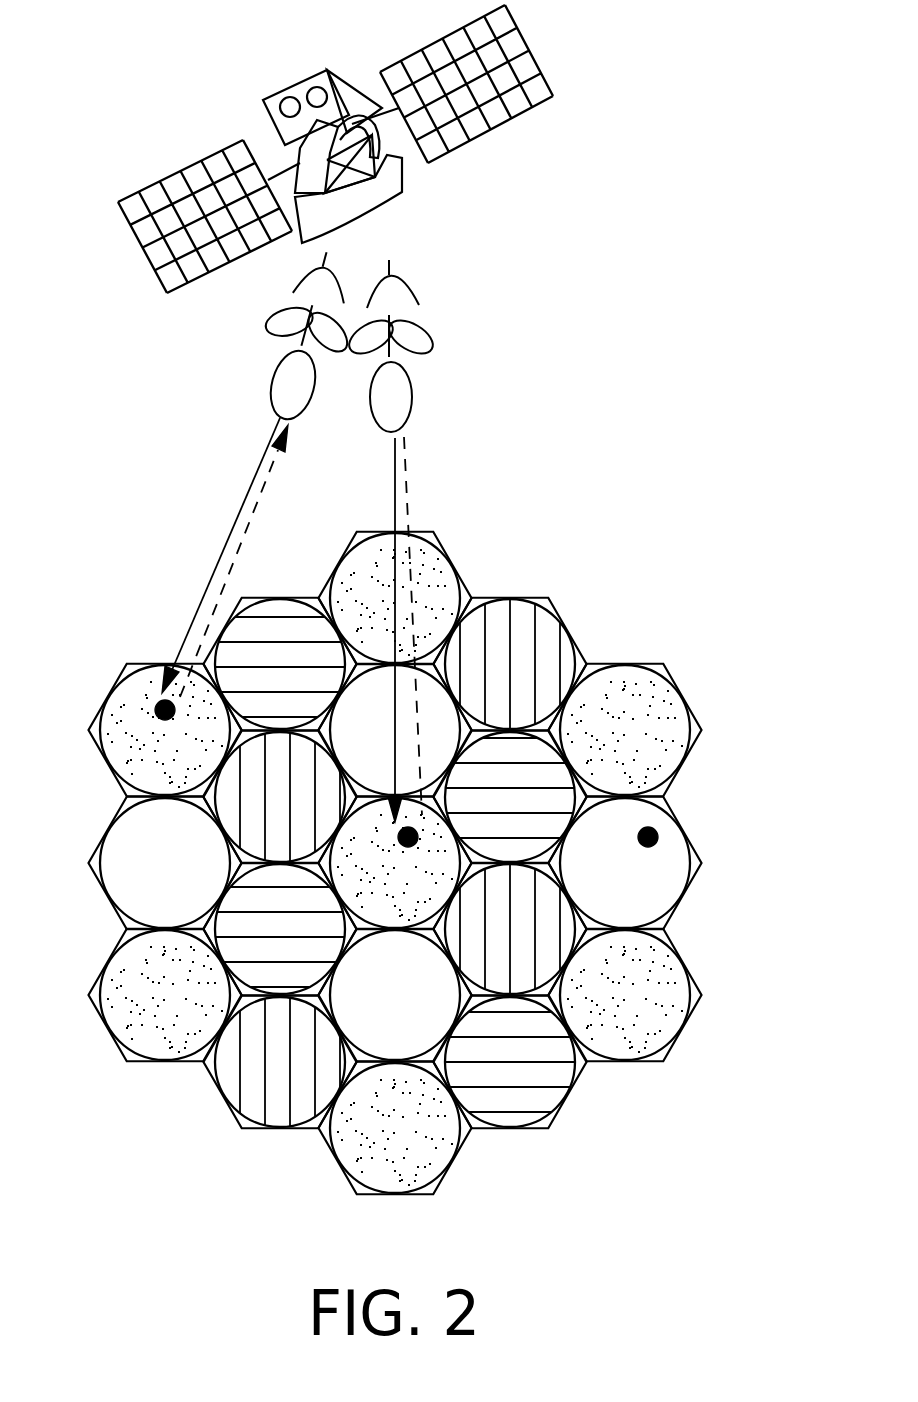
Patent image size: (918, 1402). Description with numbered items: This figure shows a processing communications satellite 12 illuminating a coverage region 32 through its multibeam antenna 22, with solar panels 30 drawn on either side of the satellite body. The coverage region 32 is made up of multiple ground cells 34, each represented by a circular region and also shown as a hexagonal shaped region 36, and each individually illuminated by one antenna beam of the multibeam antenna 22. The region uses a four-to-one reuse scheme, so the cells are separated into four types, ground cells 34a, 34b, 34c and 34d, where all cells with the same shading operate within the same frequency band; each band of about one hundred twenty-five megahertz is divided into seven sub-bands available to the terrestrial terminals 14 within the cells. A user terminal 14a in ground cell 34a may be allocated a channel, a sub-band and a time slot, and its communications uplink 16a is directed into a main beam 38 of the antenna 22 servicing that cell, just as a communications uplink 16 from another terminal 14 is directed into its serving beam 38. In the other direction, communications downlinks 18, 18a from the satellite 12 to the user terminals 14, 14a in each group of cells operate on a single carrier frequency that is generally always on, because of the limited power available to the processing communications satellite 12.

The processing communications satellite 12 is at (303, 83).
The solar panel 30 is at (543, 97).
The multibeam antenna 22 is at (393, 190).
The main beam 38 is at (287, 373).
The communications uplink 16 is at (407, 470).
The communications uplink 16a is at (262, 500).
The communications downlink 18 is at (392, 505).
The communications downlink 18a is at (205, 587).
The coverage region 32 is at (630, 628).
The ground cell 34 is at (667, 887).
The ground cell 34a is at (113, 735).
The ground cell 34b is at (273, 617).
The ground cell 34c is at (508, 620).
The ground cell 34d is at (127, 883).
The hexagonal shaped region 36 is at (703, 865).
The terrestrial terminal 14 is at (660, 837).
The user terminal 14a is at (157, 703).